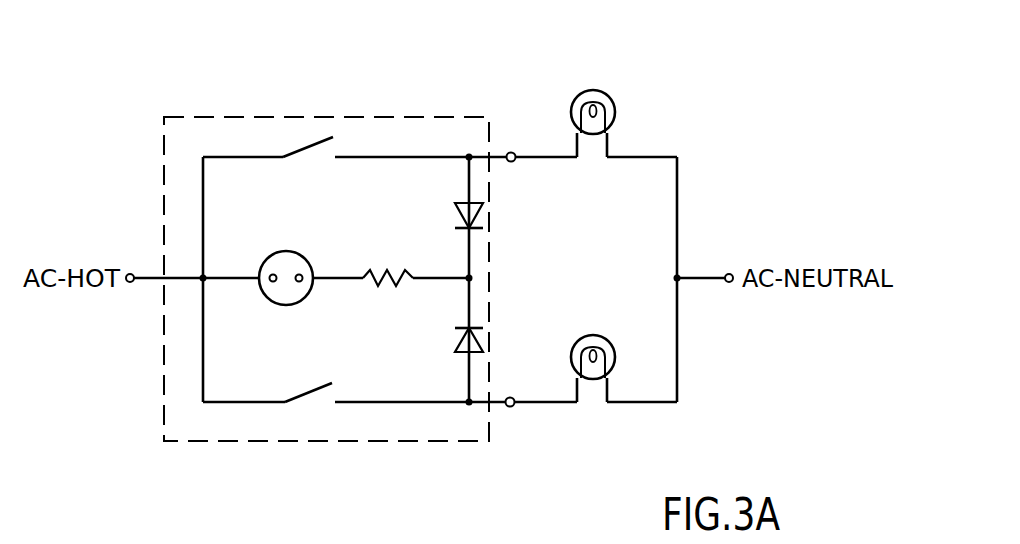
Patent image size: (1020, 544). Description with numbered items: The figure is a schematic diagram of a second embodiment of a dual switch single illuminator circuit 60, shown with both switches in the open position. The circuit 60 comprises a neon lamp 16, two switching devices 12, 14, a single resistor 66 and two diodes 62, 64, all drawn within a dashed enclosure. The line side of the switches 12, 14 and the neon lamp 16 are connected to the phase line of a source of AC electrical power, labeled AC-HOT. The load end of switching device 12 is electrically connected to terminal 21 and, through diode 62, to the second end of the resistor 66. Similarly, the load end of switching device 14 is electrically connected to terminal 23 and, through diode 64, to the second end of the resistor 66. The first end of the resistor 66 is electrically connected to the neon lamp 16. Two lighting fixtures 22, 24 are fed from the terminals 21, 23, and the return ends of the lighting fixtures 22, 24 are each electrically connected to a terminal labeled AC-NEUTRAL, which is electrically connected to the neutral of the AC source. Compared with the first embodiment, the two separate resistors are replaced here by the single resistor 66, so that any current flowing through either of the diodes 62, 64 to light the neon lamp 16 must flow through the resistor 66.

The dual switch single illuminator circuit 60 is at (253, 107).
The switching device 12 is at (308, 137).
The switching device 14 is at (301, 397).
The neon lamp 16 is at (285, 251).
The resistor 66 is at (388, 270).
The diode 62 is at (478, 218).
The diode 64 is at (478, 338).
The terminal 21 is at (511, 152).
The terminal 23 is at (512, 407).
The lighting fixture 22 is at (616, 112).
The lighting fixture 24 is at (613, 350).